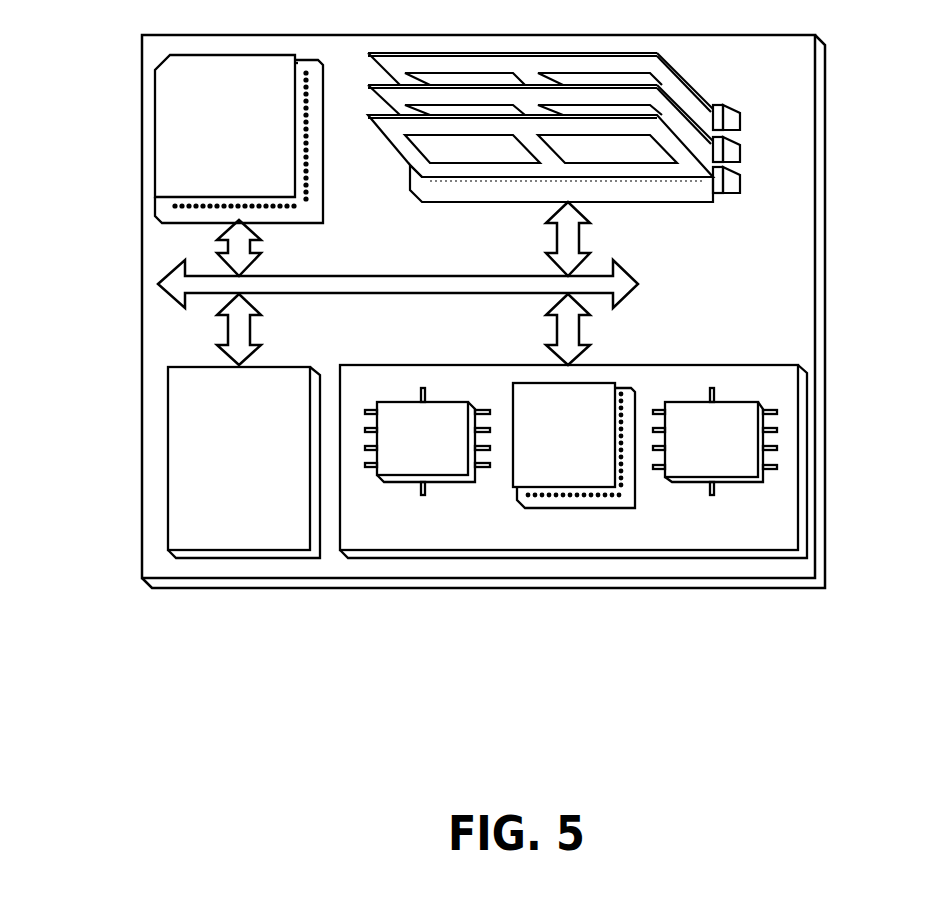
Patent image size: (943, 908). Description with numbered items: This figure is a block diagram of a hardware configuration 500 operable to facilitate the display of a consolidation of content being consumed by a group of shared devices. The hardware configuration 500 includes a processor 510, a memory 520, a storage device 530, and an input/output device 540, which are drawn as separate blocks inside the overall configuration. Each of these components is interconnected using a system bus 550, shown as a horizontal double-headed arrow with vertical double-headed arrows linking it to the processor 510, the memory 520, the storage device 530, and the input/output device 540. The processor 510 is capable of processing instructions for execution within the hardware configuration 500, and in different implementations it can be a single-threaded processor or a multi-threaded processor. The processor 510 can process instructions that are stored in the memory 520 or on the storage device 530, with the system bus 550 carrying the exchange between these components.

The hardware configuration 500 is at (118, 704).
The processor 510 is at (286, 188).
The memory 520 is at (707, 95).
The storage device 530 is at (297, 543).
The input/output device 540 is at (760, 365).
The system bus 550 is at (393, 294).